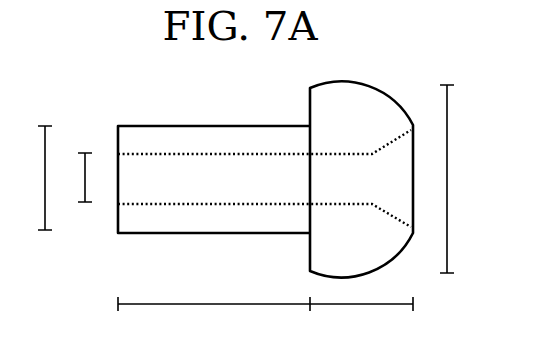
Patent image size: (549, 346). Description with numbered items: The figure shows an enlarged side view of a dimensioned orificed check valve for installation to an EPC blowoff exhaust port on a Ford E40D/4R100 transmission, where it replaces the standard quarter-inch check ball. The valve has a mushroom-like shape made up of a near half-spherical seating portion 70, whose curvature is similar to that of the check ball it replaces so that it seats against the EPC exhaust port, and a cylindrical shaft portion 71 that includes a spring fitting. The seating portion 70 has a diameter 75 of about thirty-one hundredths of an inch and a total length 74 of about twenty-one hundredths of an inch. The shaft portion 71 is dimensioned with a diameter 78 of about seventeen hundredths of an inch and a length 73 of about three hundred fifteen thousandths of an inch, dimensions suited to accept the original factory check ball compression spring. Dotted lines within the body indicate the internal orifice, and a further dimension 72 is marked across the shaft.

The seating portion 70 is at (405, 92).
The shaft portion 71 is at (148, 108).
The shaft core diameter 72 is at (74, 177).
The length 73 is at (214, 317).
The total length 74 is at (361, 317).
The diameter 75 is at (459, 179).
The diameter 78 is at (33, 178).